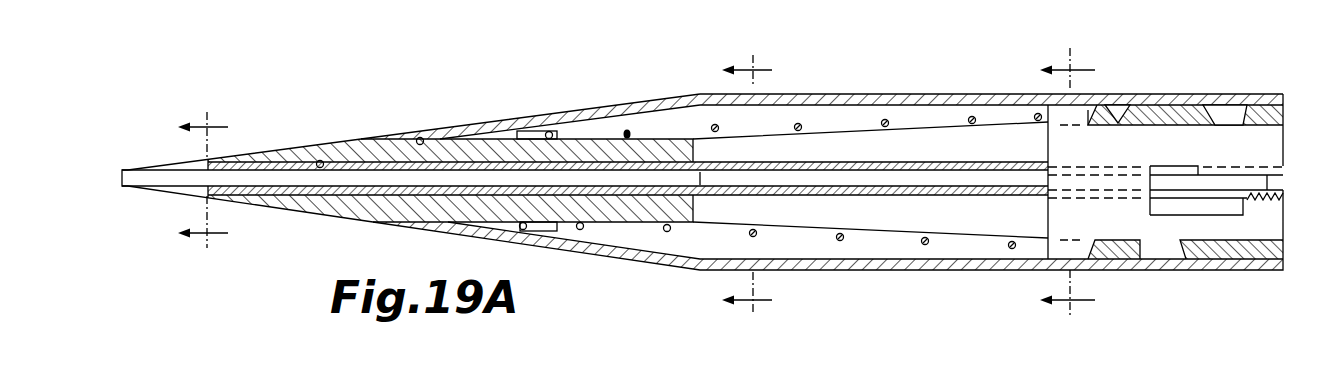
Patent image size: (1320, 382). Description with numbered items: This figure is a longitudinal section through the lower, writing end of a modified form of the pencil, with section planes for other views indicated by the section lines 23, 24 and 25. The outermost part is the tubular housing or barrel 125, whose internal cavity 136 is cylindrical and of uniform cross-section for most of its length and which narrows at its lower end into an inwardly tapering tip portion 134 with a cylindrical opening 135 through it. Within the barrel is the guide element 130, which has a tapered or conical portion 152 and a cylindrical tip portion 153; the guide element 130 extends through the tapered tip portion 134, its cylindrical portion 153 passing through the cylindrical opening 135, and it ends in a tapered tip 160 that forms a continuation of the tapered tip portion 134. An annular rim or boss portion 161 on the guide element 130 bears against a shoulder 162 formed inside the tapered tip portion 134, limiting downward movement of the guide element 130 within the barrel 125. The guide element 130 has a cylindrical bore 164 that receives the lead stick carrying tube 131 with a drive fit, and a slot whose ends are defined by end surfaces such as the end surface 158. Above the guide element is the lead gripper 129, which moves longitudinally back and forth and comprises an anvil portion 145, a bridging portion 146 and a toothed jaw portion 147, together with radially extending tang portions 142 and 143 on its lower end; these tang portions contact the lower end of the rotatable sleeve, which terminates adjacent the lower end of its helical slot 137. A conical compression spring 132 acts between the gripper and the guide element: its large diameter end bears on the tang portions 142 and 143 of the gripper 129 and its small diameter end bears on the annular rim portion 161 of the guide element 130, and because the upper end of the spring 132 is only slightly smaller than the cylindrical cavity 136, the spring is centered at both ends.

The section line 23- 23 is at (1083, 182).
The section line 24- 24 is at (765, 185).
The section line 25- 25 is at (219, 180).
The outer tubular housing or barrel 125 is at (1180, 268).
The lead gripper 129 is at (1158, 146).
The guide element 130 is at (686, 233).
The lead stick carrying tube 131 is at (808, 157).
The compression spring 132 is at (887, 122).
The inwardly tapering tip portion 134 is at (478, 120).
The cylindrical opening 135 is at (422, 139).
The internal cavity 136 is at (937, 115).
The helical slot 137 is at (1217, 120).
The radially extending tang portion 142 is at (1058, 246).
The radially extending tang portion 143 is at (1068, 122).
The anvil portion 145 is at (1234, 160).
The bridging portion 146 is at (1121, 228).
The toothed jaw portion 147 is at (1283, 228).
The tapered or conical portion 152 is at (733, 137).
The cylindrical tip portion 153 is at (348, 146).
The end surface 158 is at (700, 213).
The tapered tip 160 is at (293, 150).
The annular rim or boss portion 161 is at (536, 134).
The shoulder 162 is at (533, 231).
The cylindrical bore 164 is at (321, 161).